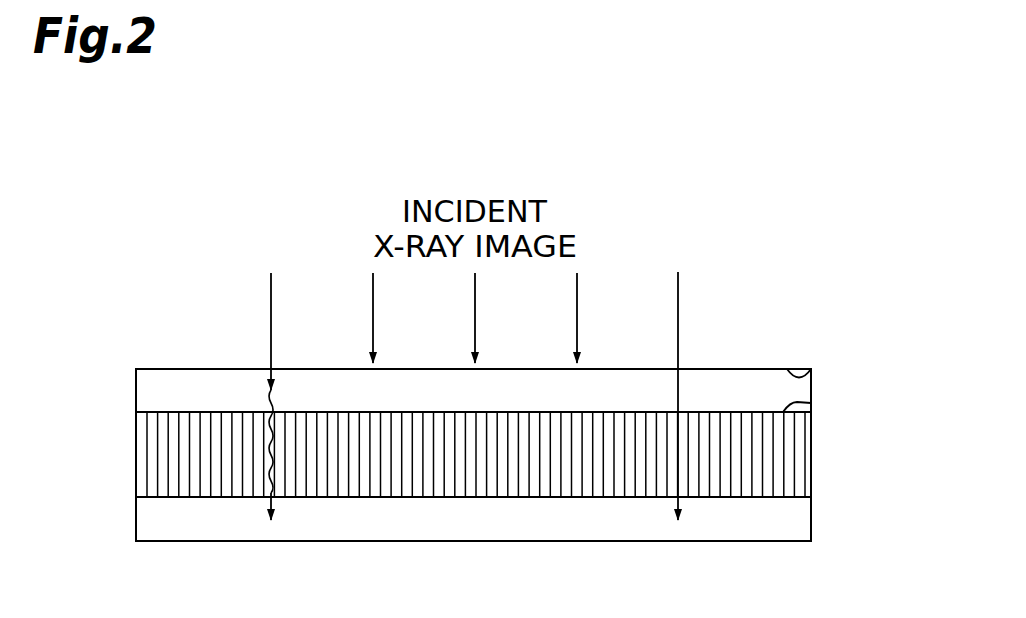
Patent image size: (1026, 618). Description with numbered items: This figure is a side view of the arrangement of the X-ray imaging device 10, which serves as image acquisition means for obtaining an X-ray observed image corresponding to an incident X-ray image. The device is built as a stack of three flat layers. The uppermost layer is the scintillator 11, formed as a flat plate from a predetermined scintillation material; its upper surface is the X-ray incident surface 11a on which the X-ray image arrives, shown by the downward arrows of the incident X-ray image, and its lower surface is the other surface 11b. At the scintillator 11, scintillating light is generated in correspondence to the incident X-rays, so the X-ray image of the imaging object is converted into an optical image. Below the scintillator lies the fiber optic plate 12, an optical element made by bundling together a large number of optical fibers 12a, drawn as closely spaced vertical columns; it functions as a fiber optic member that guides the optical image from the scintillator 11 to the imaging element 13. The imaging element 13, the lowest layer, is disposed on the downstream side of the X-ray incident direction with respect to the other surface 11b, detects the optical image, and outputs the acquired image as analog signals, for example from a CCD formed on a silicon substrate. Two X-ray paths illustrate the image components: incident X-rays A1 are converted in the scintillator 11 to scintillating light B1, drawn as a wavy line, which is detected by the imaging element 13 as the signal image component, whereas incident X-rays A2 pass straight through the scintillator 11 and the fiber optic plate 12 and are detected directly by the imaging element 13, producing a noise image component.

The X-ray imaging device 10 is at (178, 282).
The scintillator 11 is at (145, 390).
The X-ray incident surface 11a is at (811, 367).
The other surface of the scintillator 11b is at (811, 403).
The fiber optic plate 12 is at (135, 461).
The optical fibers 12a is at (805, 470).
The imaging element 13 is at (148, 524).
The incident X-rays A1 is at (270, 305).
The incident X-rays A2 is at (681, 318).
The scintillating light B1 is at (270, 472).